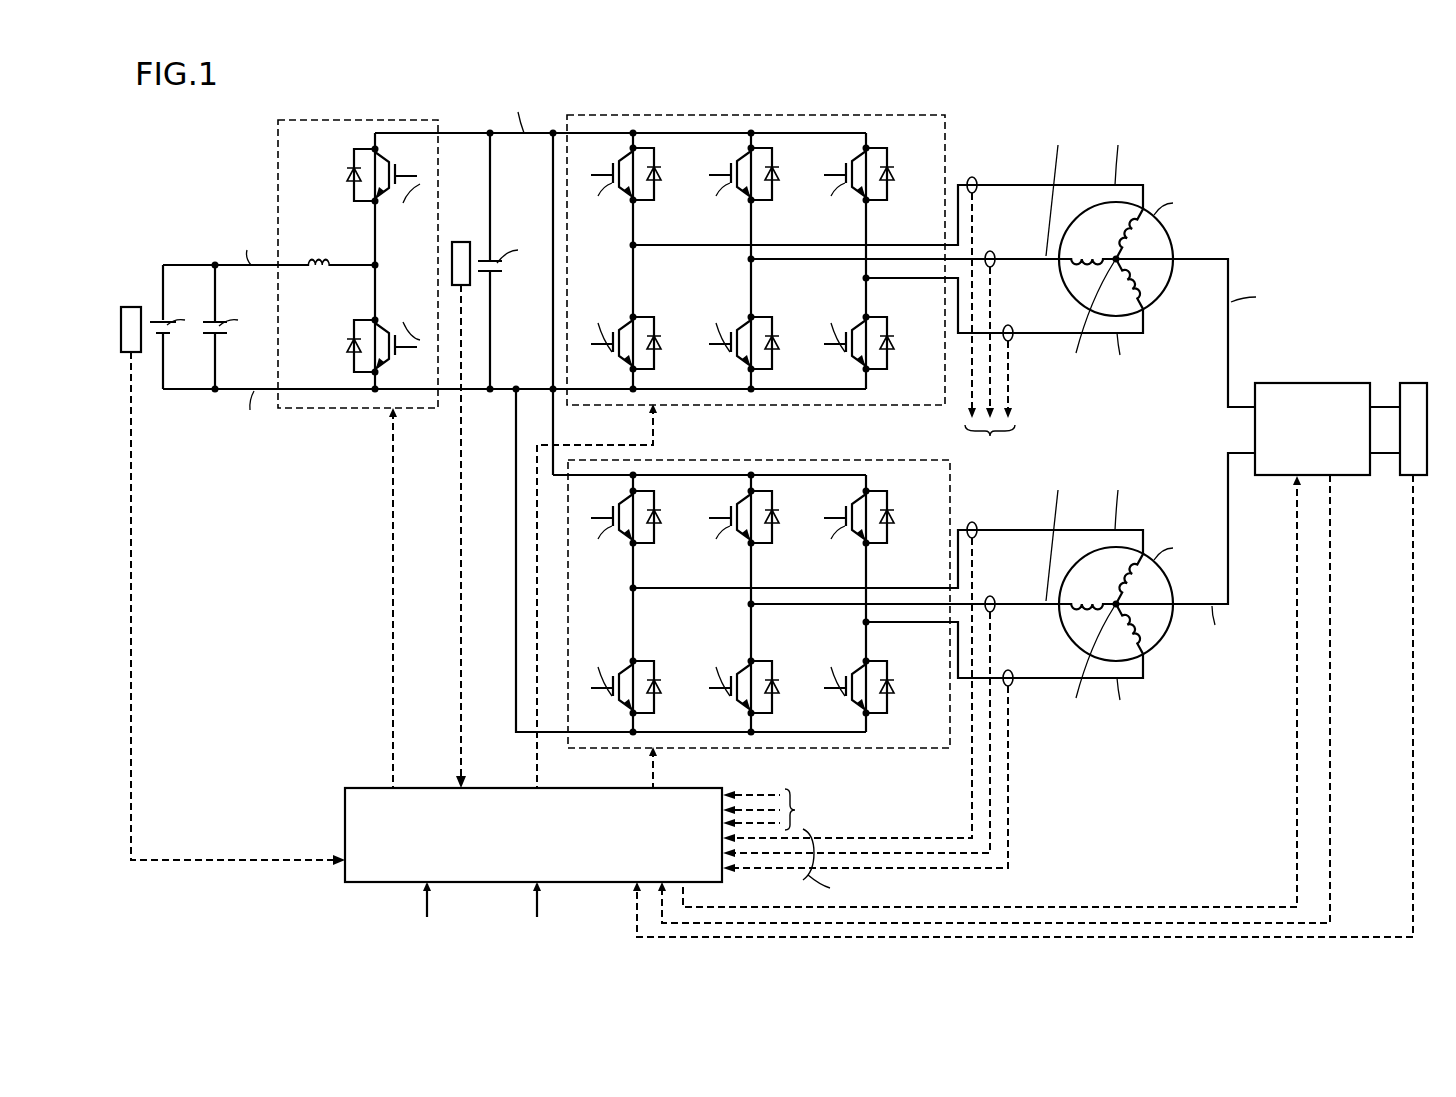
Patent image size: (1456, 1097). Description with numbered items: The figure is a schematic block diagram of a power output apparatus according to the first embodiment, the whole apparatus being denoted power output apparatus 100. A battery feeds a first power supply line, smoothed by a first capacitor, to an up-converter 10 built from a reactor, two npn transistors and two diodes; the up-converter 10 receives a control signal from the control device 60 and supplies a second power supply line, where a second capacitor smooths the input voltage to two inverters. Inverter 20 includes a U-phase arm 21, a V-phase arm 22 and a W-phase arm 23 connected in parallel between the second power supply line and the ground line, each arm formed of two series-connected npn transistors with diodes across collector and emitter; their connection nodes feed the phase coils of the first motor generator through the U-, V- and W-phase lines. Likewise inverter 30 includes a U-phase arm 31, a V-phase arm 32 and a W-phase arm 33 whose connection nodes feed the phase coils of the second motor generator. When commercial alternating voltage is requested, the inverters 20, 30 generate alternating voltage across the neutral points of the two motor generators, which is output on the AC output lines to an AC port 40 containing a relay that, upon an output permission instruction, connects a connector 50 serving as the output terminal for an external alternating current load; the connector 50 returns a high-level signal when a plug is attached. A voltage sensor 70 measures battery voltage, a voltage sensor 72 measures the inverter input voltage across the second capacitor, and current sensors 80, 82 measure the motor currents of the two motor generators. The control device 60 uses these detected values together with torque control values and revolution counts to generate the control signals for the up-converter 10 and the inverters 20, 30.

The power output apparatus 100 is at (1217, 109).
The up-converter 10 is at (300, 412).
The inverter 20 is at (749, 295).
The inverter 30 is at (733, 585).
The AC port 40 is at (1331, 383).
The connector 50 is at (1413, 383).
The control device 60 is at (360, 788).
The voltage sensor 70 is at (131, 307).
The voltage sensor 72 is at (461, 242).
The current sensor 80 is at (975, 178).
The current sensor 82 is at (975, 522).
The U-phase arm 21 is at (627, 256).
The V-phase arm 22 is at (744, 273).
The W-phase arm 23 is at (860, 291).
The U-phase arm 31 is at (627, 599).
The V-phase arm 32 is at (744, 618).
The W-phase arm 33 is at (860, 635).